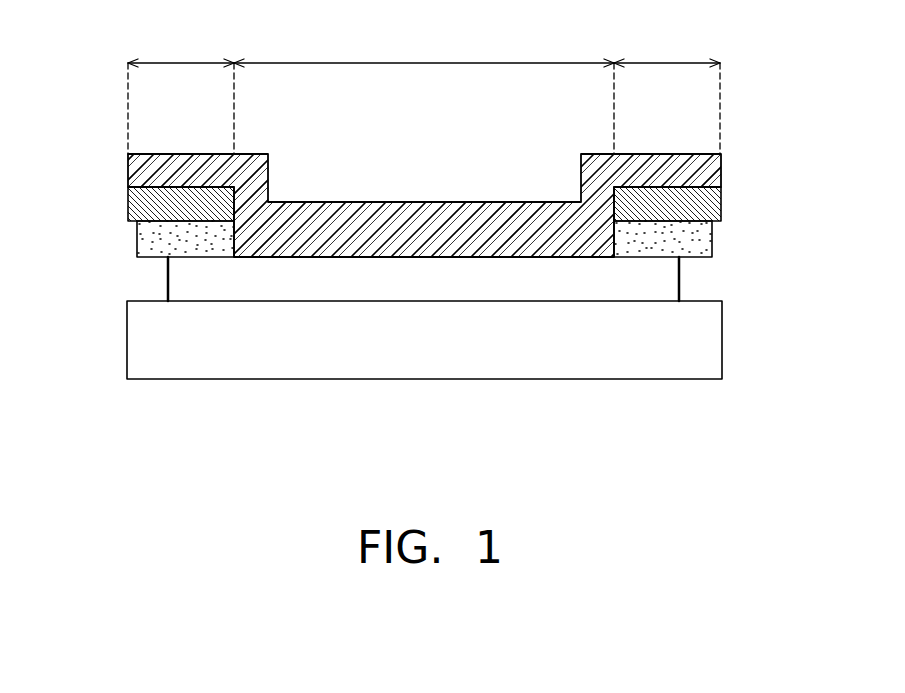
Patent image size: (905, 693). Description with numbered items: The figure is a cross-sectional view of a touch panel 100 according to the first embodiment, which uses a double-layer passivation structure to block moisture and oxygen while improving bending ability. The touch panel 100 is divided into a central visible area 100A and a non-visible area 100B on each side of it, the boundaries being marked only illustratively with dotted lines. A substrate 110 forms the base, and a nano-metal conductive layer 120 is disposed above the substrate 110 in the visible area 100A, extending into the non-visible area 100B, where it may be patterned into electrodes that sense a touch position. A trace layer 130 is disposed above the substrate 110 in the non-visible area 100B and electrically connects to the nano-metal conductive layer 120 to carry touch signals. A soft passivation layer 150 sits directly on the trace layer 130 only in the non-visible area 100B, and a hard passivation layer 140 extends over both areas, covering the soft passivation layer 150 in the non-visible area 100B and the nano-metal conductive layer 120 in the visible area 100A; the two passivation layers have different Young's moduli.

The touch panel 100 is at (100, 115).
The visible area 100A is at (424, 47).
The non-visible area 100B is at (424, 90).
The substrate 110 is at (722, 338).
The nano-metal conductive layer 120 is at (679, 278).
The trace layer 130 is at (137, 238).
The hard passivation layer 140 is at (721, 170).
The soft passivation layer 150 is at (128, 205).